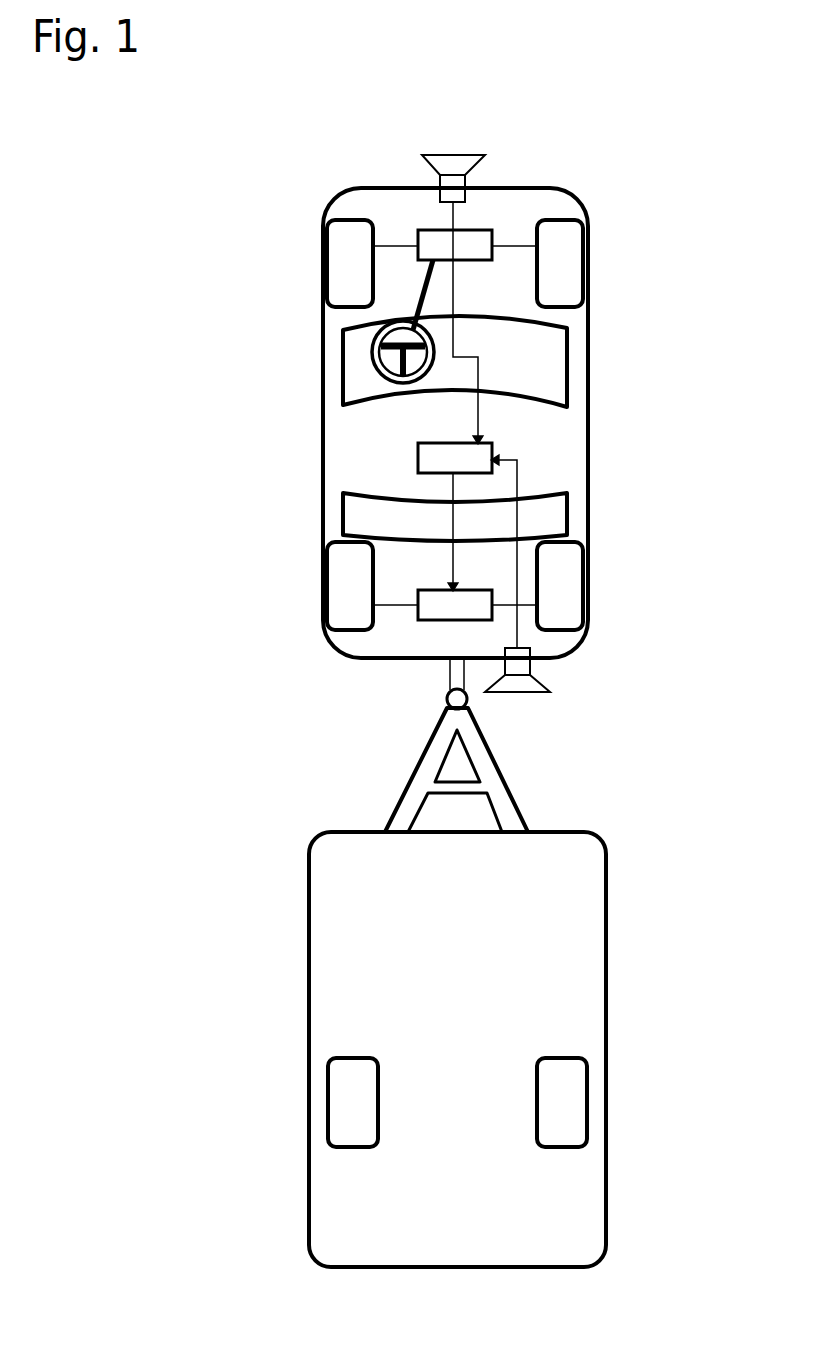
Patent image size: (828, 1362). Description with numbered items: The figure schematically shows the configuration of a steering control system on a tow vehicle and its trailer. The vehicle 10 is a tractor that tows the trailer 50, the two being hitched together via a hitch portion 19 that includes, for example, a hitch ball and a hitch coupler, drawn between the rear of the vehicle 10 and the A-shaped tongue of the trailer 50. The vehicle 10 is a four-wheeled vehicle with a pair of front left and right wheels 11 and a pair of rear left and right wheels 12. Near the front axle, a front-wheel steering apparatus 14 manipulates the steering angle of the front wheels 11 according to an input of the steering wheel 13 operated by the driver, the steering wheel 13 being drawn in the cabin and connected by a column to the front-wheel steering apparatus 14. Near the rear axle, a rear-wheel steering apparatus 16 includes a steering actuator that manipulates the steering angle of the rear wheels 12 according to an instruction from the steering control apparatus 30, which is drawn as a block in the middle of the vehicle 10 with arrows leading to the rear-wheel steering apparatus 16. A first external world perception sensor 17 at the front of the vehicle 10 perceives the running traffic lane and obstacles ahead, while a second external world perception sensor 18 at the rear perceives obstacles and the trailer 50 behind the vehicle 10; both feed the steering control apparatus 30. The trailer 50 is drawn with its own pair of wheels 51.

The vehicle 10 is at (588, 383).
The front wheels 11 is at (327, 272).
The rear wheels 12 is at (335, 580).
The steering wheel 13 is at (373, 365).
The front-wheel steering apparatus 14 is at (420, 230).
The rear-wheel steering apparatus 16 is at (433, 620).
The first external world perception sensor 17 is at (487, 157).
The second external world perception sensor 18 is at (548, 697).
The hitch portion 19 is at (447, 700).
The steering control apparatus 30 is at (418, 455).
The trailer 50 is at (606, 913).
The trailer wheels 51 is at (330, 1102).